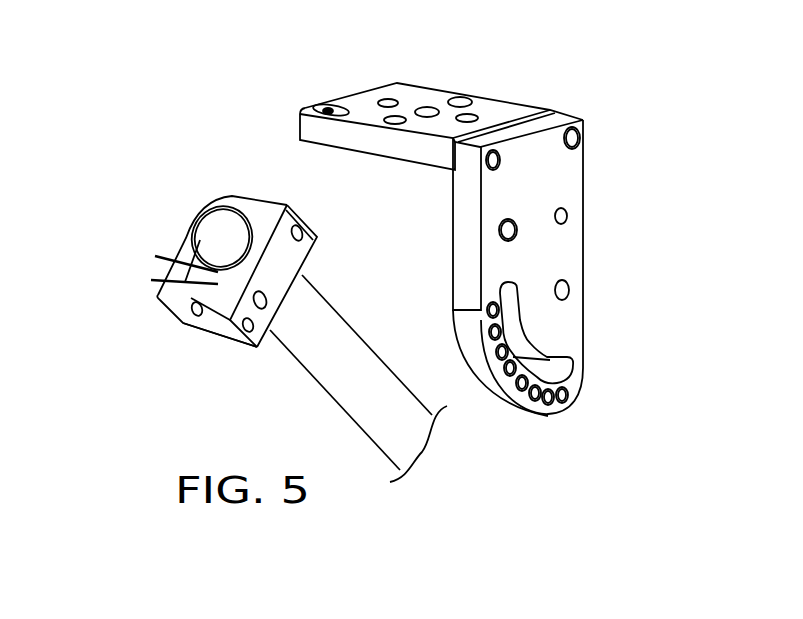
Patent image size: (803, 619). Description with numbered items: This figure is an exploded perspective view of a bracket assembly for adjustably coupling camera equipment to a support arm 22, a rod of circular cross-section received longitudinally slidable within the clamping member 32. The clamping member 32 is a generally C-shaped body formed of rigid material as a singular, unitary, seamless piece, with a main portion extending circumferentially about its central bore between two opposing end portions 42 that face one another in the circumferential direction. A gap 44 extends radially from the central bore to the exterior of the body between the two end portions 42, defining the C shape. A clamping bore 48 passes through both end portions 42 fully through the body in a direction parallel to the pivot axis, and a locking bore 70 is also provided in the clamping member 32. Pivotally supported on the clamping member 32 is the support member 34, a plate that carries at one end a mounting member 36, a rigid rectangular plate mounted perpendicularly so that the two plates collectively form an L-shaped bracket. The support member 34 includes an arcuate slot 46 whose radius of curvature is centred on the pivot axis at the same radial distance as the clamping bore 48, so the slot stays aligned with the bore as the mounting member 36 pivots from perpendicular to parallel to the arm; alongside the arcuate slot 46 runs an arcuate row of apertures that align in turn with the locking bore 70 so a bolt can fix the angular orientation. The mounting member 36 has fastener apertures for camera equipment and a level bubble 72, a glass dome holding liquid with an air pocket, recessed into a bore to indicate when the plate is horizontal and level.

The support arm 22 is at (318, 353).
The clamping member 32 is at (207, 268).
The support member 34 is at (558, 268).
The mounting member 36 is at (436, 105).
The end portions 42 is at (173, 312).
The gap 44 is at (200, 212).
The arcuate slot 46 is at (557, 360).
The clamping bore 48 is at (155, 258).
The locking bore 70 is at (163, 280).
The level bubble 72 is at (320, 108).